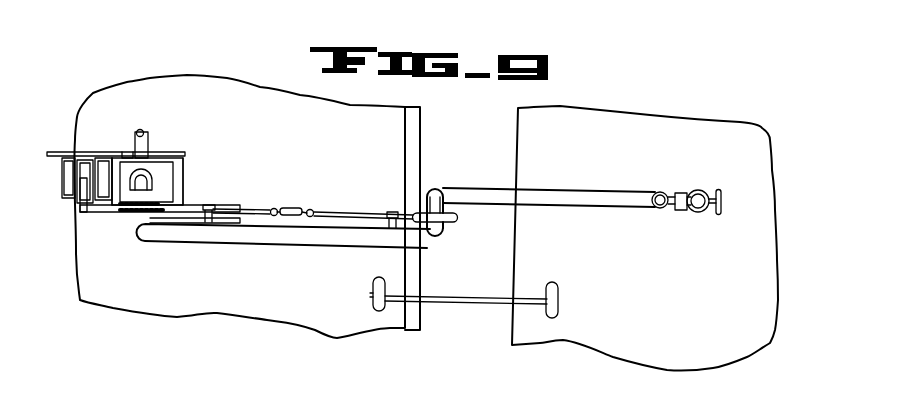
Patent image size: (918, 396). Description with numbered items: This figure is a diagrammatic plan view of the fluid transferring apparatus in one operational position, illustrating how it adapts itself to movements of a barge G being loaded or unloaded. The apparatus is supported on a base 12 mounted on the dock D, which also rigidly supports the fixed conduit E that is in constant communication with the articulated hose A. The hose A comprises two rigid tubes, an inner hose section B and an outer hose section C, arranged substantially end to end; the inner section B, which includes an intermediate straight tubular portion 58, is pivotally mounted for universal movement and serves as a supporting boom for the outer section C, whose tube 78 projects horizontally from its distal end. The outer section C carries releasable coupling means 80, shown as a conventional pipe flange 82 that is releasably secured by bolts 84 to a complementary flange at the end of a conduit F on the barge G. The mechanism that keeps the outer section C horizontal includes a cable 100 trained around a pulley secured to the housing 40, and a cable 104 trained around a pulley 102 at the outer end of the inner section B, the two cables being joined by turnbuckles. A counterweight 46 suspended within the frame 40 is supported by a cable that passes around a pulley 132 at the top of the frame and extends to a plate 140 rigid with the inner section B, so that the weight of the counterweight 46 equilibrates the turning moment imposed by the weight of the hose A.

The base 12 is at (176, 152).
The housing 40 is at (165, 170).
The counterweight 46 is at (100, 166).
The straight tubular portion 58 is at (283, 234).
The pipe 78 is at (560, 197).
The releasable coupling means 80 is at (673, 212).
The pipe flange 82 is at (699, 217).
The bolts 84 is at (704, 190).
The cable 100 is at (233, 208).
The pulley 102 is at (455, 223).
The cable 104 is at (350, 198).
The pulley 132 is at (79, 197).
The plate 140 is at (113, 214).
The articulated hose A is at (218, 242).
The inner hose section B is at (352, 239).
The outer hose section C is at (573, 207).
The dock D is at (337, 136).
The conduit E is at (150, 141).
The conduit F is at (723, 199).
The barge G is at (654, 149).